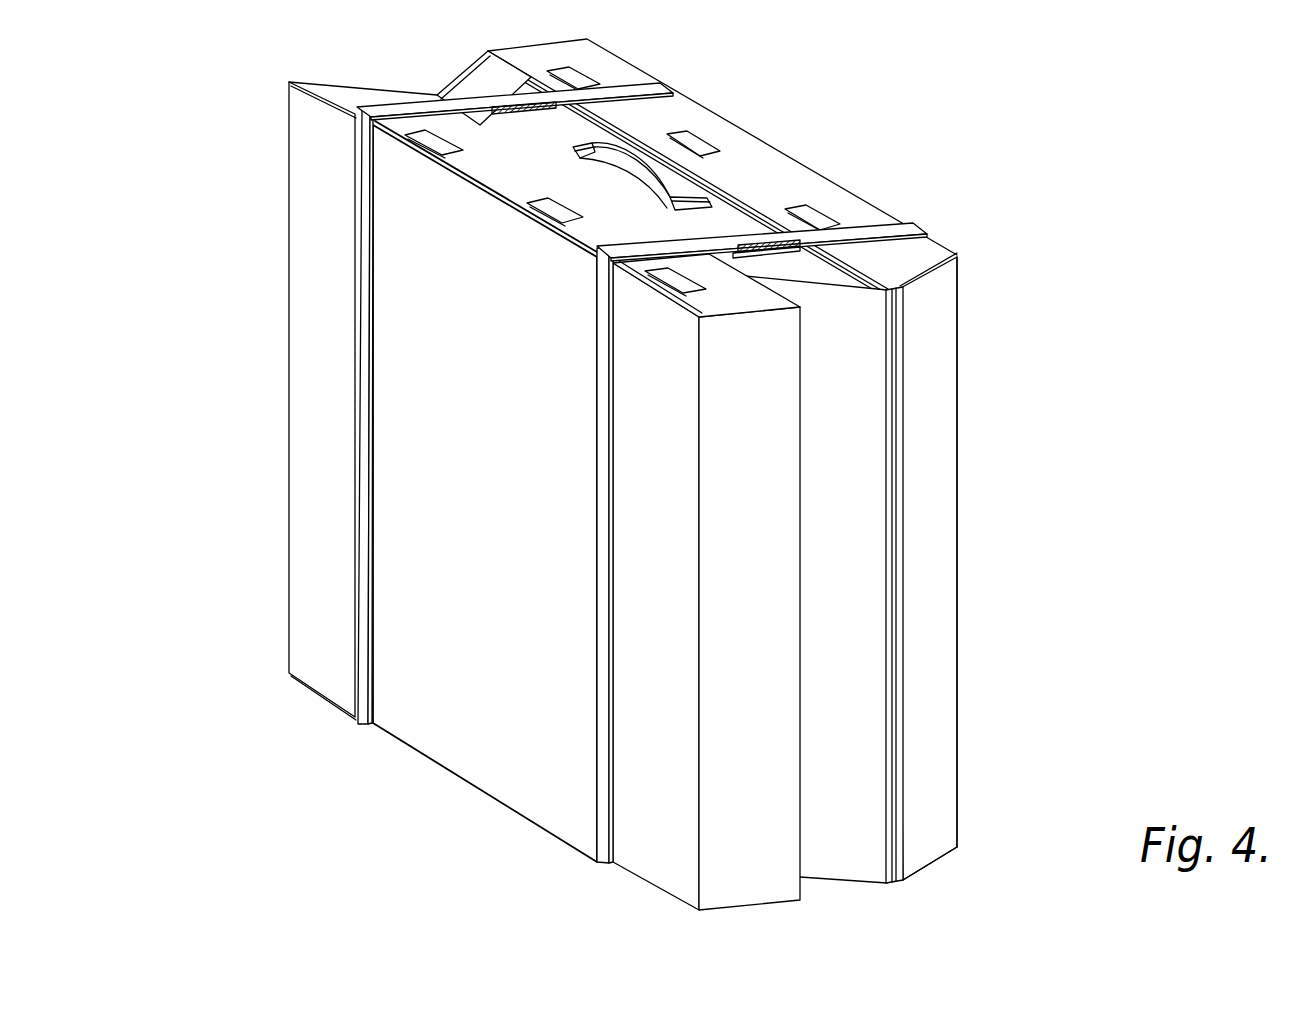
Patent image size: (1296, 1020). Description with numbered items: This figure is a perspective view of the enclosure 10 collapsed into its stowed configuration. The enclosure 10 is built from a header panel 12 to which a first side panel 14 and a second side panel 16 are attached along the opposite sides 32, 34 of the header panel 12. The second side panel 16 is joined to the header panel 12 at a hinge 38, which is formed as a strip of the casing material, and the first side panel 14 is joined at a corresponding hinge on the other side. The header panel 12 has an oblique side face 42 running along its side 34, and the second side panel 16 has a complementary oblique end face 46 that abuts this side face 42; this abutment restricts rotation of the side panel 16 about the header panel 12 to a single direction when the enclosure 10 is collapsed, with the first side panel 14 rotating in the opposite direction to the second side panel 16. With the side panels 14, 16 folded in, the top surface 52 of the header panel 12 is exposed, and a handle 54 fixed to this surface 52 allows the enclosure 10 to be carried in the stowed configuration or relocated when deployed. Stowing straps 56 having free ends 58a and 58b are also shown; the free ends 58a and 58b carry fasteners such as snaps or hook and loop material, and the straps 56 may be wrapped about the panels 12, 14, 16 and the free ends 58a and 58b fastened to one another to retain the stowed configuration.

The enclosure 10 is at (1007, 245).
The header panel 12 is at (436, 80).
The first side panel 14 is at (283, 230).
The second side panel 16 is at (848, 182).
The side of header panel 32 is at (476, 78).
The side of header panel 34 is at (850, 279).
The hinge 38 is at (893, 853).
The oblique side face 42 is at (837, 857).
The oblique end face 46 is at (928, 648).
The surface 52 is at (580, 128).
The handle 54 is at (645, 157).
The stowing strap 56 is at (358, 722).
The free end of stowing strap 58a is at (762, 236).
The free end of stowing strap 58b is at (760, 254).